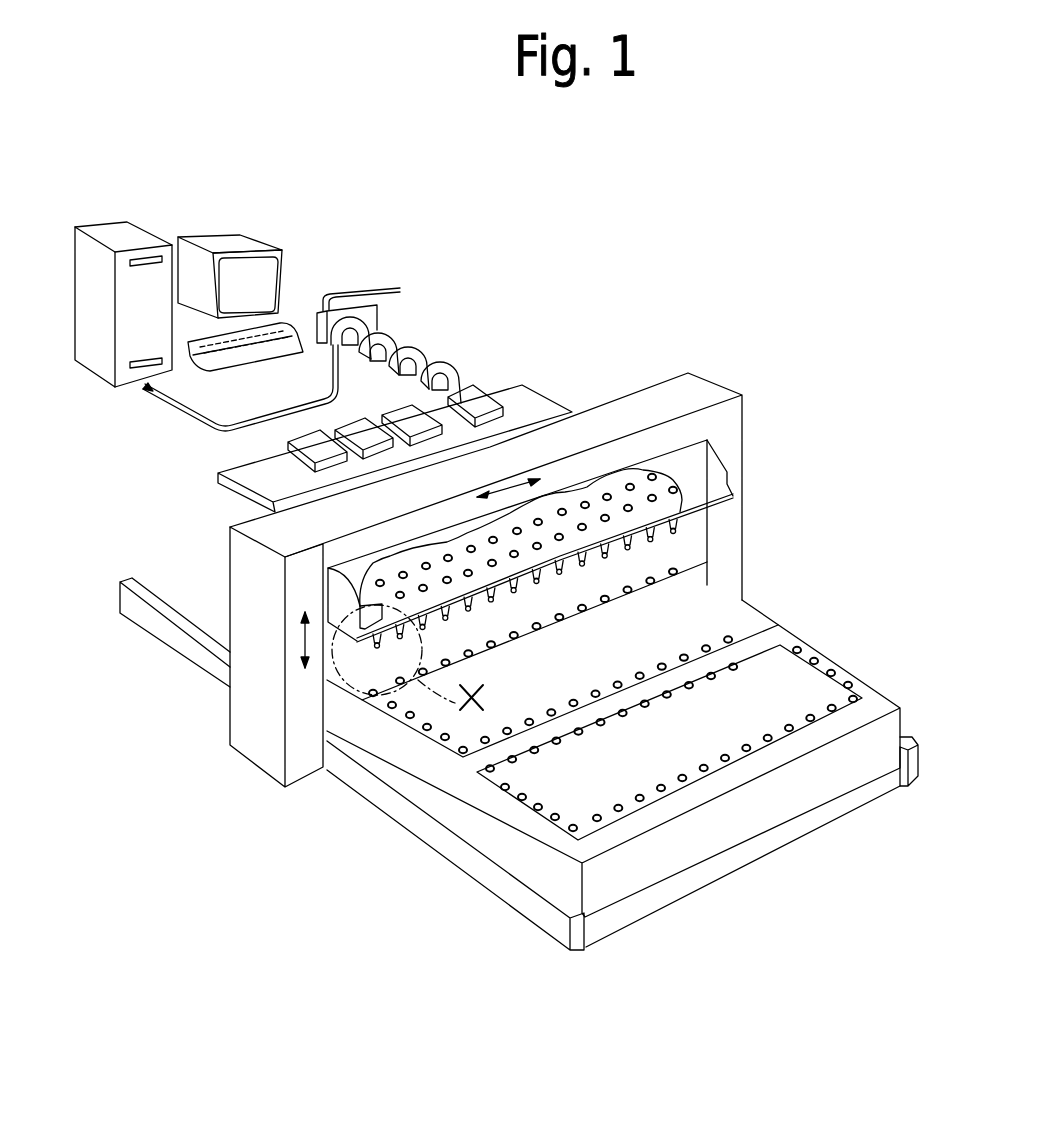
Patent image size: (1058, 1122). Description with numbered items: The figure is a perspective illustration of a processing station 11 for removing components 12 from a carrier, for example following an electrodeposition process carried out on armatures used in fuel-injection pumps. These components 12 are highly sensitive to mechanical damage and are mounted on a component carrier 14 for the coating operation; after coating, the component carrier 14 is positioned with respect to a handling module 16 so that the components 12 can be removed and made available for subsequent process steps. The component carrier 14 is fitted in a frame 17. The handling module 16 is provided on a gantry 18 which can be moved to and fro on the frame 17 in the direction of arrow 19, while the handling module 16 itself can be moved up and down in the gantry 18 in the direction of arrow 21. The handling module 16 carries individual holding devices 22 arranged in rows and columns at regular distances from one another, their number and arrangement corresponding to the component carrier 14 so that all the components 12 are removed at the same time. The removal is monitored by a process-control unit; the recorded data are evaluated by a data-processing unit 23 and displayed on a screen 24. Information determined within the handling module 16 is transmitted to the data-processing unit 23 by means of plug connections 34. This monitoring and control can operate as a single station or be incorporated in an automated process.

The processing station 11 is at (320, 895).
The components 12 is at (628, 594).
The component carrier 14 is at (798, 688).
The handling module 16 is at (698, 460).
The frame 17 is at (906, 693).
The gantry 18 is at (758, 390).
The arrow 19 is at (278, 802).
The arrow 21 is at (305, 637).
The holding devices 22 is at (685, 552).
The data-processing unit 23 is at (92, 396).
The screen 24 is at (287, 243).
The plug connections 34 is at (481, 397).